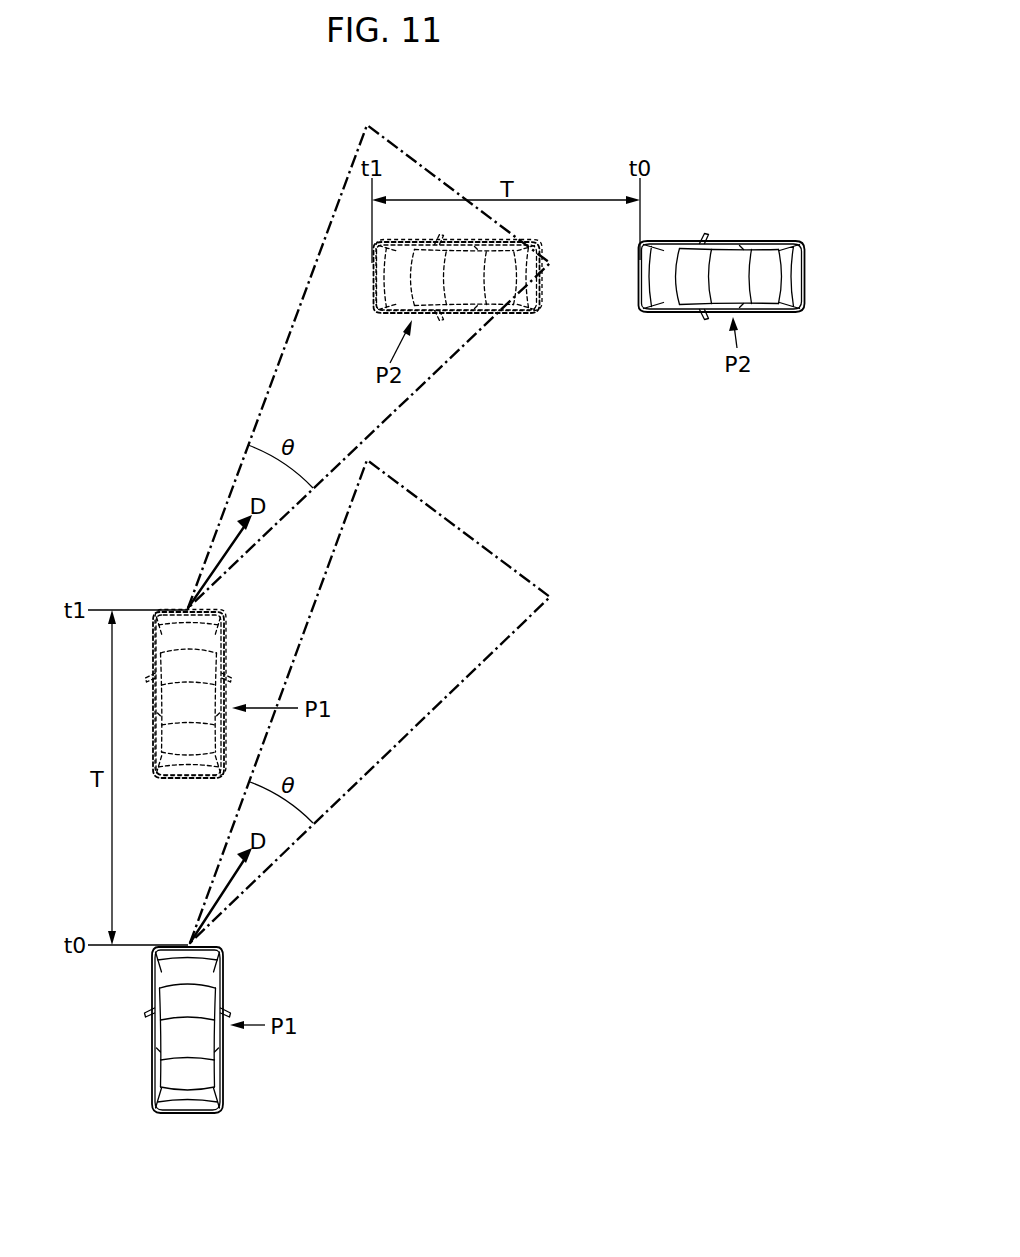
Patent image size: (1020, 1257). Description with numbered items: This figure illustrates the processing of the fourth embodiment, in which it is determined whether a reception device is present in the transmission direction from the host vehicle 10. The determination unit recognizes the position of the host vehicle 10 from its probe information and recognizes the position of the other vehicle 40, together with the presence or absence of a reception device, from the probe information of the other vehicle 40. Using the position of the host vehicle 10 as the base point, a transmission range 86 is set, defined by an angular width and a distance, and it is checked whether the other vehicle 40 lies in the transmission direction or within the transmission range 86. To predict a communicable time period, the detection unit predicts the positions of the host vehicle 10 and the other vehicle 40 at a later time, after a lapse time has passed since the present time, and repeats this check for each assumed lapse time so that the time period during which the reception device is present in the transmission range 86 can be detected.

The host vehicle 10 is at (187, 1114).
The other vehicle 40 is at (718, 240).
The transmission range 86 is at (305, 288).